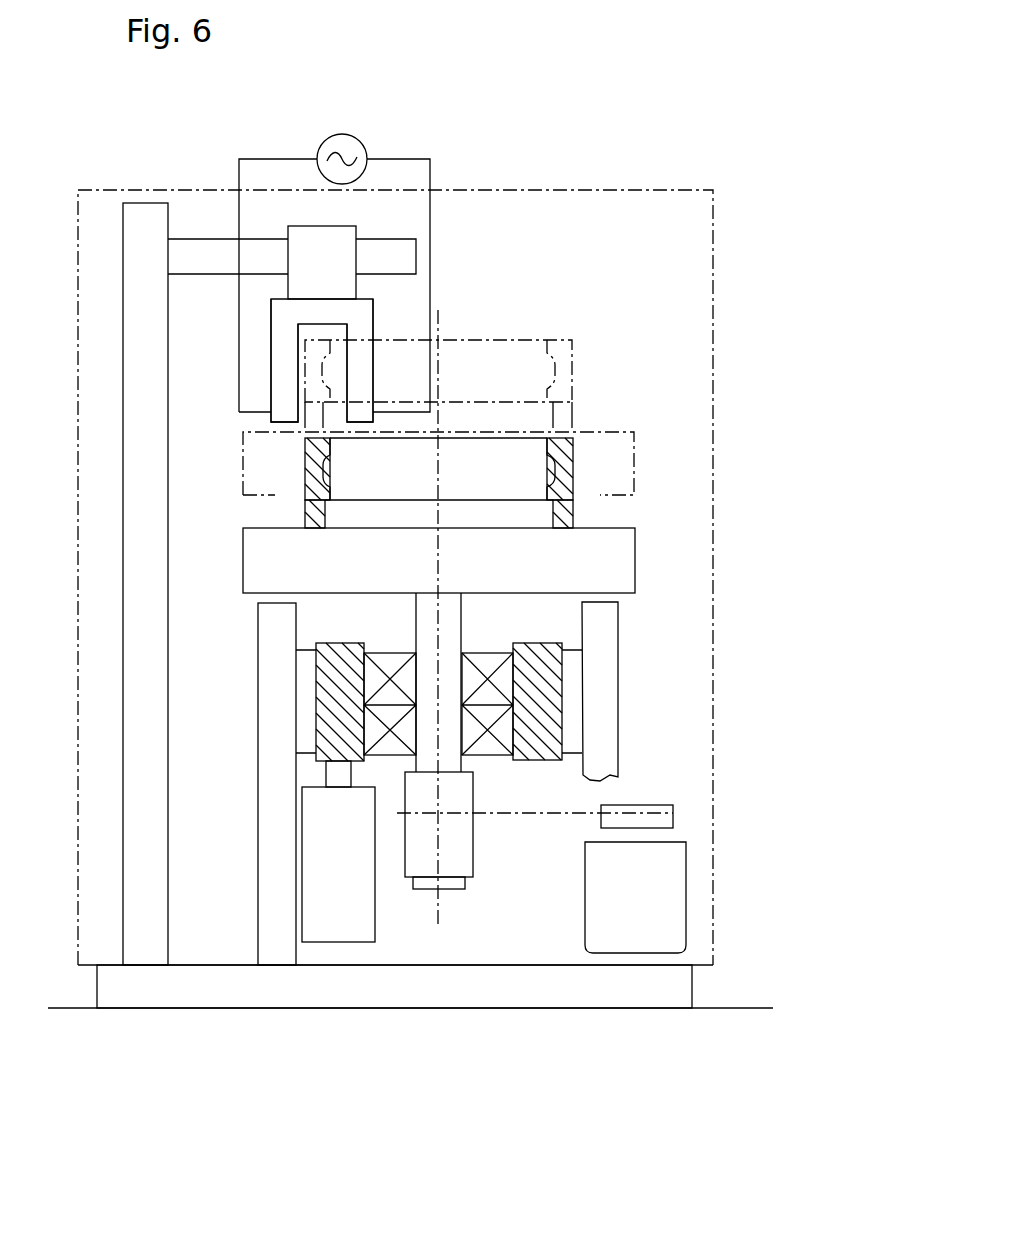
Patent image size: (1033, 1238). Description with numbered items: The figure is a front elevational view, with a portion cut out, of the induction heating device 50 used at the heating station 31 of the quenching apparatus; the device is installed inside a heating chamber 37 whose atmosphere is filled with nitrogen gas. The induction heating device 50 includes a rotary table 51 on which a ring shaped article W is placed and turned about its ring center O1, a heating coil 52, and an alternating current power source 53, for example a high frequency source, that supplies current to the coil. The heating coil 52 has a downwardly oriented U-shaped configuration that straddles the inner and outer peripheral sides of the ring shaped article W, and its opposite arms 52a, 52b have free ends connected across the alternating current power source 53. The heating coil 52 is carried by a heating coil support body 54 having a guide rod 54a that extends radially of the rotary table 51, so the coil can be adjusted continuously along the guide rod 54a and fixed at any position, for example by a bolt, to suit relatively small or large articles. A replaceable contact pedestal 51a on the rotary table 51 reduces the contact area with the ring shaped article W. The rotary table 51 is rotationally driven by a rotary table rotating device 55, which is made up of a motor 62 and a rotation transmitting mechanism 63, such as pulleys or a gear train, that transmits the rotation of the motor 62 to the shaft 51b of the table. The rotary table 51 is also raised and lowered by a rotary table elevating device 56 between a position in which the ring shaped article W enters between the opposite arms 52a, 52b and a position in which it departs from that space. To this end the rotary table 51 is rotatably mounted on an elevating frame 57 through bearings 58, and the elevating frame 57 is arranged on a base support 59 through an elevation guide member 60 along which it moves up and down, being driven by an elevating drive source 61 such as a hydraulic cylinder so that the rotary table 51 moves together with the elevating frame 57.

The heating station 31 is at (727, 207).
The heating chamber 37 is at (713, 258).
The induction heating device 50 is at (673, 537).
The rotary table 51 is at (615, 574).
The contact pedestal 51a is at (573, 515).
The shaft 51b is at (450, 633).
The heating coil 52 is at (362, 318).
The arm of the heating coil 52a is at (282, 395).
The arm of the heating coil 52b is at (357, 392).
The alternating current power source 53 is at (343, 148).
The heating coil support body 54 is at (140, 323).
The guide rod 54a is at (395, 249).
The rotary table rotating device 55 is at (665, 907).
The rotary table elevating device 56 is at (377, 925).
The elevating frame 57 is at (342, 643).
The bearings 58 is at (373, 734).
The base support 59 is at (357, 987).
The elevation guide member 60 is at (280, 696).
The elevating drive source 61 is at (331, 858).
The motor 62 is at (633, 935).
The rotation transmitting mechanism 63 is at (523, 813).
The ring shaped article W is at (562, 388).
The ring center O1 is at (440, 478).